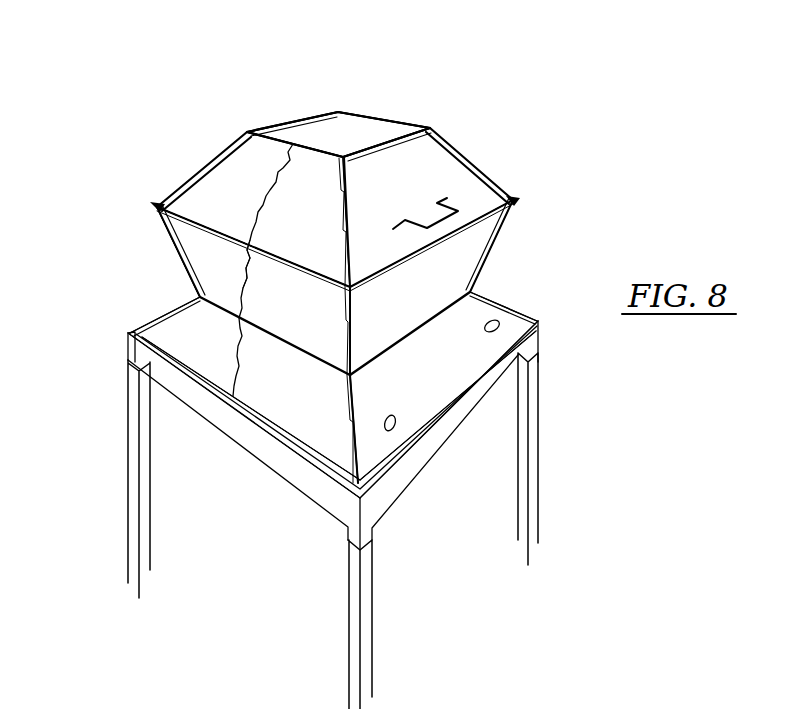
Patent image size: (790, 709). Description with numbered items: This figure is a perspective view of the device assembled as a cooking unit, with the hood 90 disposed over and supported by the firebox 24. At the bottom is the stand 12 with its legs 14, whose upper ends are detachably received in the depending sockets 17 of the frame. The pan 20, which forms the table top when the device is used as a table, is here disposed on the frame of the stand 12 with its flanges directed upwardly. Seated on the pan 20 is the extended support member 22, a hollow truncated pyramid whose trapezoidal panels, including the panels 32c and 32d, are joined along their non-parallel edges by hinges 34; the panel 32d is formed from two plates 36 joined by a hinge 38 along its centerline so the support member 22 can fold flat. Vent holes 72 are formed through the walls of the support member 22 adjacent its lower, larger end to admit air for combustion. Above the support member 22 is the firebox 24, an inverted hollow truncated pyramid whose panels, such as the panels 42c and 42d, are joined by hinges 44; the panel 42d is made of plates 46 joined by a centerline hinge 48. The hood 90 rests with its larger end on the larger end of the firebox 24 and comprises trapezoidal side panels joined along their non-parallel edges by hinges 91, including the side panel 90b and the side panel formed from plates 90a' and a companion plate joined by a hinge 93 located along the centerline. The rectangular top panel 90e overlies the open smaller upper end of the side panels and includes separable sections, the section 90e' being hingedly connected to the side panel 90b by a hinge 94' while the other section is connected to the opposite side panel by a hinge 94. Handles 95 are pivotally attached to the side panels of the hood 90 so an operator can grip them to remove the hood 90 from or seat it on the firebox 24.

The stand 12 is at (255, 455).
The legs 14 is at (148, 497).
The sockets 17 is at (127, 347).
The pan 20 is at (145, 326).
The support member 22 is at (486, 301).
The firebox 24 is at (182, 252).
The panel 32c is at (444, 403).
The panel 32d is at (317, 452).
The hinges 34 is at (193, 307).
The plates 36 is at (188, 345).
The hinge 38 is at (247, 372).
The panel 42c is at (486, 253).
The panel 42d is at (302, 346).
The hinges 44 is at (167, 234).
The plates 46 is at (235, 274).
The hinge 48 is at (256, 298).
The vent holes 72 is at (493, 333).
The hood 90 is at (204, 156).
The plate 90a' is at (250, 169).
The side panel 90b is at (425, 189).
The top panel 90e is at (338, 101).
The section 90e' is at (393, 115).
The hinges 91 is at (190, 182).
The hinge 93 is at (276, 176).
The hinge 94 is at (294, 95).
The hinge 94' is at (418, 129).
The handles 95 is at (465, 229).